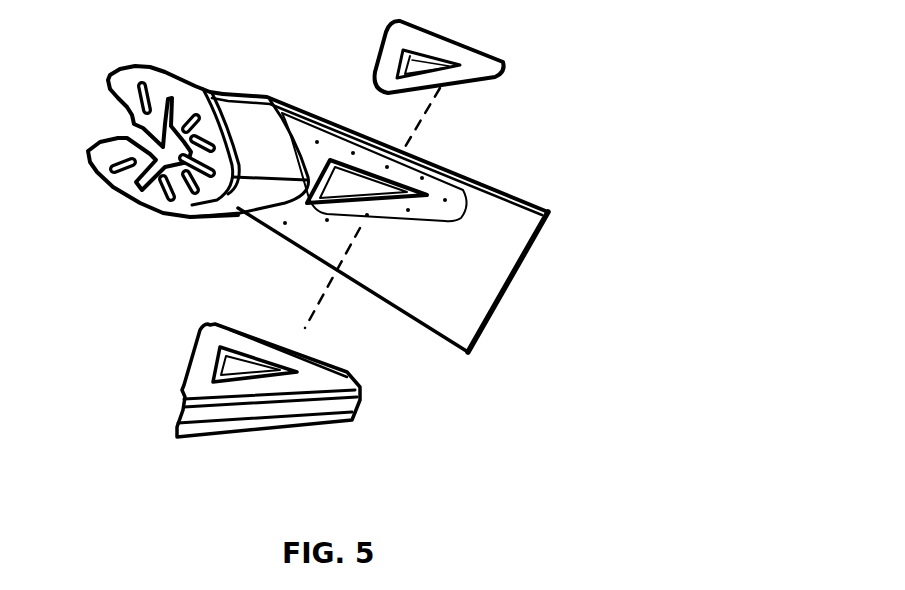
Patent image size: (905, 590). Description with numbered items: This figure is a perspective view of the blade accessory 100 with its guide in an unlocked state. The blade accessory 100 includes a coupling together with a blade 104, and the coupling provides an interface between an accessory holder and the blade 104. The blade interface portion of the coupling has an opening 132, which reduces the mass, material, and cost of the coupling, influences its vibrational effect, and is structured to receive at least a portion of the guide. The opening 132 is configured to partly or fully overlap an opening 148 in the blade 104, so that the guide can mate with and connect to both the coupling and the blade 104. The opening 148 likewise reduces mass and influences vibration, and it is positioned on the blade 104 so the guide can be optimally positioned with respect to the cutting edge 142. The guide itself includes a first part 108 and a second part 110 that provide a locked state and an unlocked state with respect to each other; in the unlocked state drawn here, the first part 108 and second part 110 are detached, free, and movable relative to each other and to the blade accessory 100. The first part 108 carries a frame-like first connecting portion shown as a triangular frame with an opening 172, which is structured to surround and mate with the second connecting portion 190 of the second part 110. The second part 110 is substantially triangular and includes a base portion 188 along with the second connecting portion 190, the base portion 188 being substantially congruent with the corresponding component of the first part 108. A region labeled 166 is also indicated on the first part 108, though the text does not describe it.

The blade accessory 100 is at (692, 51).
The blade 104 is at (442, 304).
The first part 108 is at (107, 320).
The second part 110 is at (537, 7).
The opening 132 is at (337, 187).
The opening 148 is at (363, 182).
The cutting edge 142 is at (517, 278).
The base portion 166 is at (355, 437).
The opening 172 is at (227, 358).
The base portion 188 is at (472, 76).
The second connecting portion 190 is at (425, 56).